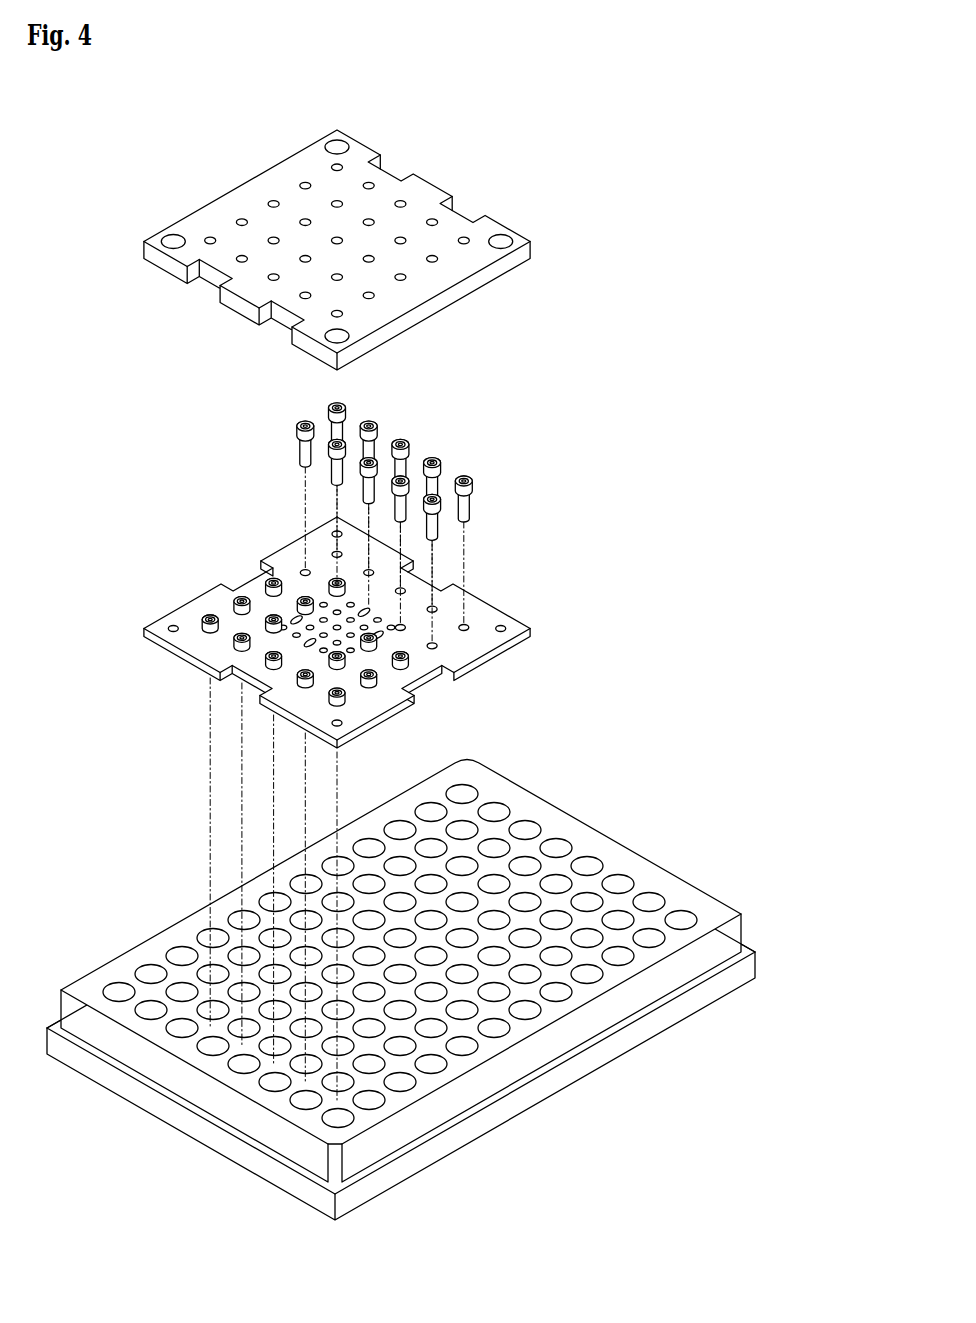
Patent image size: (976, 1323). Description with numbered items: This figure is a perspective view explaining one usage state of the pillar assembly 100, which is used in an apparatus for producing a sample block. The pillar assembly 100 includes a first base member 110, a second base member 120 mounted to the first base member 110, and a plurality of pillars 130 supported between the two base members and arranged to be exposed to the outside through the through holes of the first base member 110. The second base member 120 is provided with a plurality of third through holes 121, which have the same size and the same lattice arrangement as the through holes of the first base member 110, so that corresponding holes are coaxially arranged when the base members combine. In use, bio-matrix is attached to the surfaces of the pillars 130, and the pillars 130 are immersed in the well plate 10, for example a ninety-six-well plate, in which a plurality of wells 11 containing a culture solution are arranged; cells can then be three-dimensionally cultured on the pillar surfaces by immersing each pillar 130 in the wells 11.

The well plate 10 is at (401, 990).
The well 11 is at (152, 973).
The pillar assembly 100 is at (341, 418).
The first base member 110 is at (487, 612).
The second base member 120 is at (337, 242).
The third through hole 121 is at (273, 201).
The pillar 130 is at (466, 474).